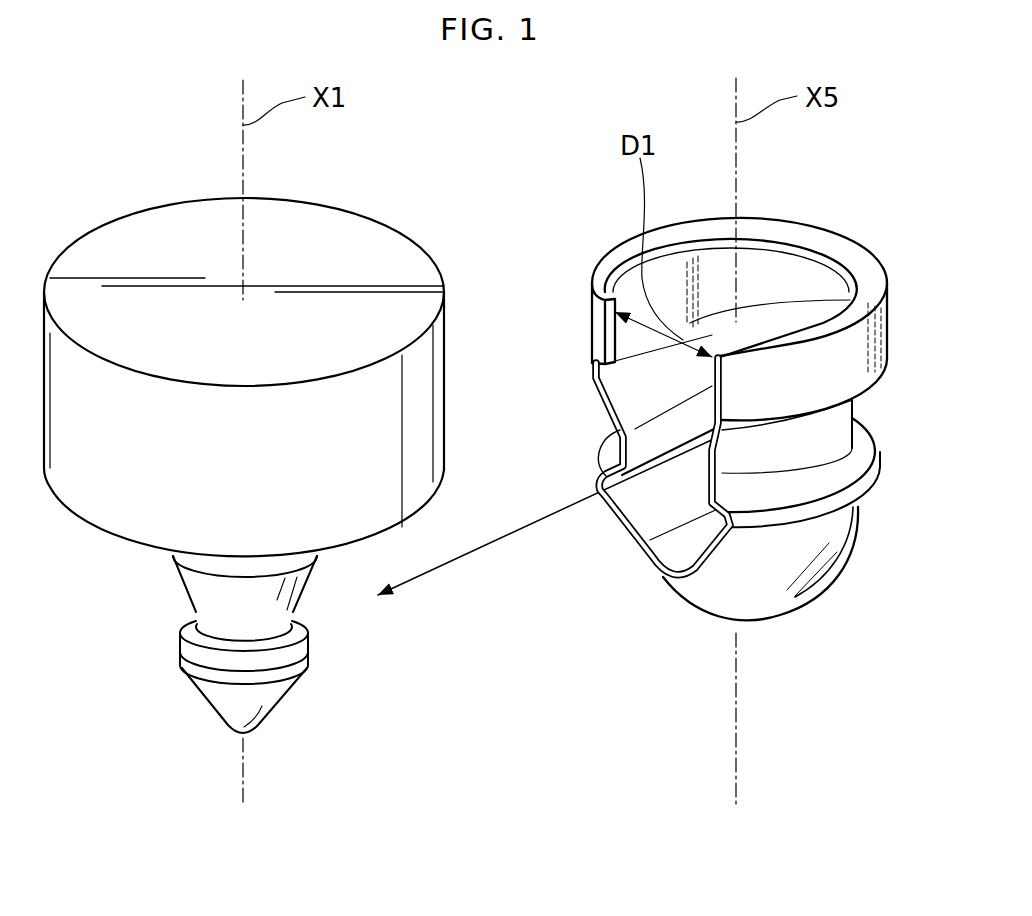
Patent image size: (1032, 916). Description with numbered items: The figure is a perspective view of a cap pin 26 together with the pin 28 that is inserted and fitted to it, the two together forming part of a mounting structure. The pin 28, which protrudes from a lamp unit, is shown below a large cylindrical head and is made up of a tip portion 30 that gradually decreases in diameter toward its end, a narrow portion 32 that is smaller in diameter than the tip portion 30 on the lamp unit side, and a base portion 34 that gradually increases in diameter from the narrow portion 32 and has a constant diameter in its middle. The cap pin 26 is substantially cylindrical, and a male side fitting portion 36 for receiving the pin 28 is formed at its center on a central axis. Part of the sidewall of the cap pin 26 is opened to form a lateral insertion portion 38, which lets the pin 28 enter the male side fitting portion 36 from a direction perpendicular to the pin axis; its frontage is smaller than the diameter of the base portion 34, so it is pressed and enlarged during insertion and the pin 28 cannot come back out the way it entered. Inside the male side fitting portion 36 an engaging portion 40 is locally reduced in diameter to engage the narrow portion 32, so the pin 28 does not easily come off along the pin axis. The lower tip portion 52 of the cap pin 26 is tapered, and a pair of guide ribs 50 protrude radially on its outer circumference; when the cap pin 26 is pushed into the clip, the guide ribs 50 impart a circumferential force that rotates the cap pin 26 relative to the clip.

The cap pin 26 is at (719, 432).
The pin 28 is at (244, 472).
The tip portion 30 is at (262, 706).
The narrow portion 32 is at (283, 630).
The base portion 34 is at (206, 565).
The male side fitting portion 36 is at (769, 258).
The lateral insertion portion 38 is at (605, 322).
The engaging portion 40 is at (640, 443).
The guide rib 50 is at (858, 545).
The tip portion 52 is at (712, 597).